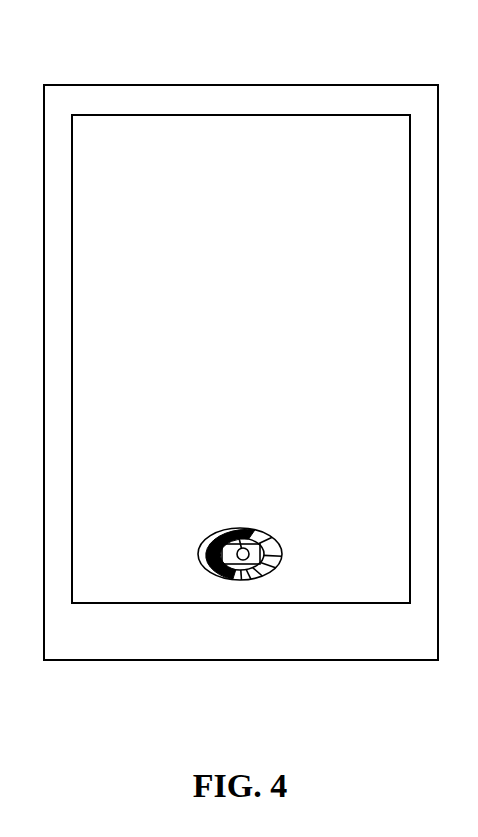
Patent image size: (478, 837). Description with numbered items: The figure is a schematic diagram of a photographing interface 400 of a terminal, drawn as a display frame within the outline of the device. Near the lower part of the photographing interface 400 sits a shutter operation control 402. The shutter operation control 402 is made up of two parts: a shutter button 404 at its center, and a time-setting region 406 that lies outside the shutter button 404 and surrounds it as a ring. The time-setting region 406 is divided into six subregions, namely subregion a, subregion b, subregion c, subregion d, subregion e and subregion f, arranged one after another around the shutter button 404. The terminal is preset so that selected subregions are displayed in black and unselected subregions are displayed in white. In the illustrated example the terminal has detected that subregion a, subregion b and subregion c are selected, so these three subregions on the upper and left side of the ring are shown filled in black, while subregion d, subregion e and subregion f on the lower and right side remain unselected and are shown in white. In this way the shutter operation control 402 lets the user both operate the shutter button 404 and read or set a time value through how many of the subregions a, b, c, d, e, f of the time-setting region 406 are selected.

The photographing interface 400 is at (259, 36).
The shutter operation control 402 is at (259, 520).
The shutter button 404 is at (233, 528).
The time-setting region 406 is at (281, 551).
The subregion a is at (248, 526).
The subregion b is at (203, 537).
The subregion c is at (210, 572).
The subregion d is at (257, 570).
The subregion e is at (281, 556).
The subregion f is at (278, 539).